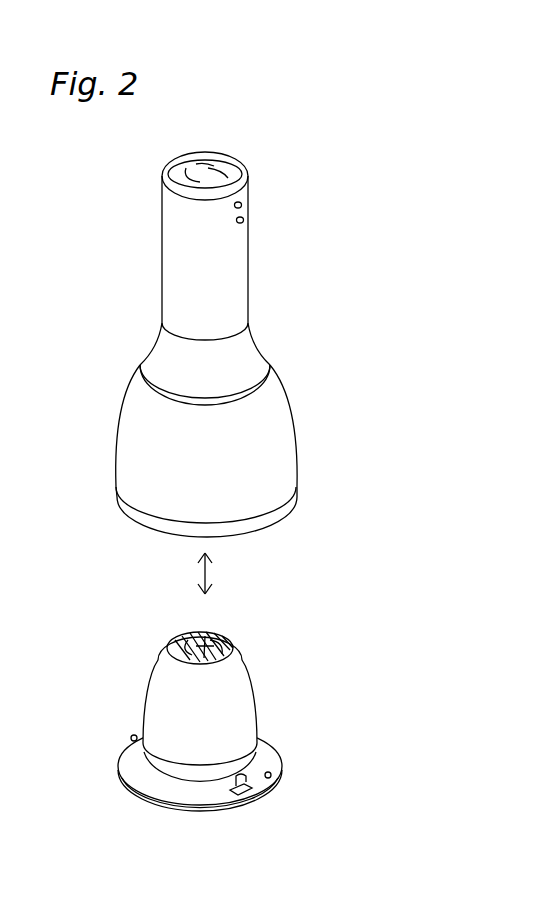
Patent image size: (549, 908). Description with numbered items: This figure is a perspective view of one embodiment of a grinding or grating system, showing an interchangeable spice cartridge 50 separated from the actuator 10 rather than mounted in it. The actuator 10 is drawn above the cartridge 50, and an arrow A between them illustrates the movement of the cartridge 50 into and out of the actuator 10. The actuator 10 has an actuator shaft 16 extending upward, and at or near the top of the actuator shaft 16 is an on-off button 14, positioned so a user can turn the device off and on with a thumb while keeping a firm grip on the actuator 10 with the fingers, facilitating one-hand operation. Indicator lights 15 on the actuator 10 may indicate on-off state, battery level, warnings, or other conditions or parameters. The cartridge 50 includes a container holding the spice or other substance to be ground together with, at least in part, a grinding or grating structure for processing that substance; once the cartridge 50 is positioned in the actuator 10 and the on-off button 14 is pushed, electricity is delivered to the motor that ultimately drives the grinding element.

The actuator 10 is at (324, 224).
The on-off button 14 is at (216, 177).
The indicator lights 15 is at (257, 206).
The actuator shaft 16 is at (160, 243).
The cartridge 50 is at (149, 637).
The arrow A is at (212, 570).